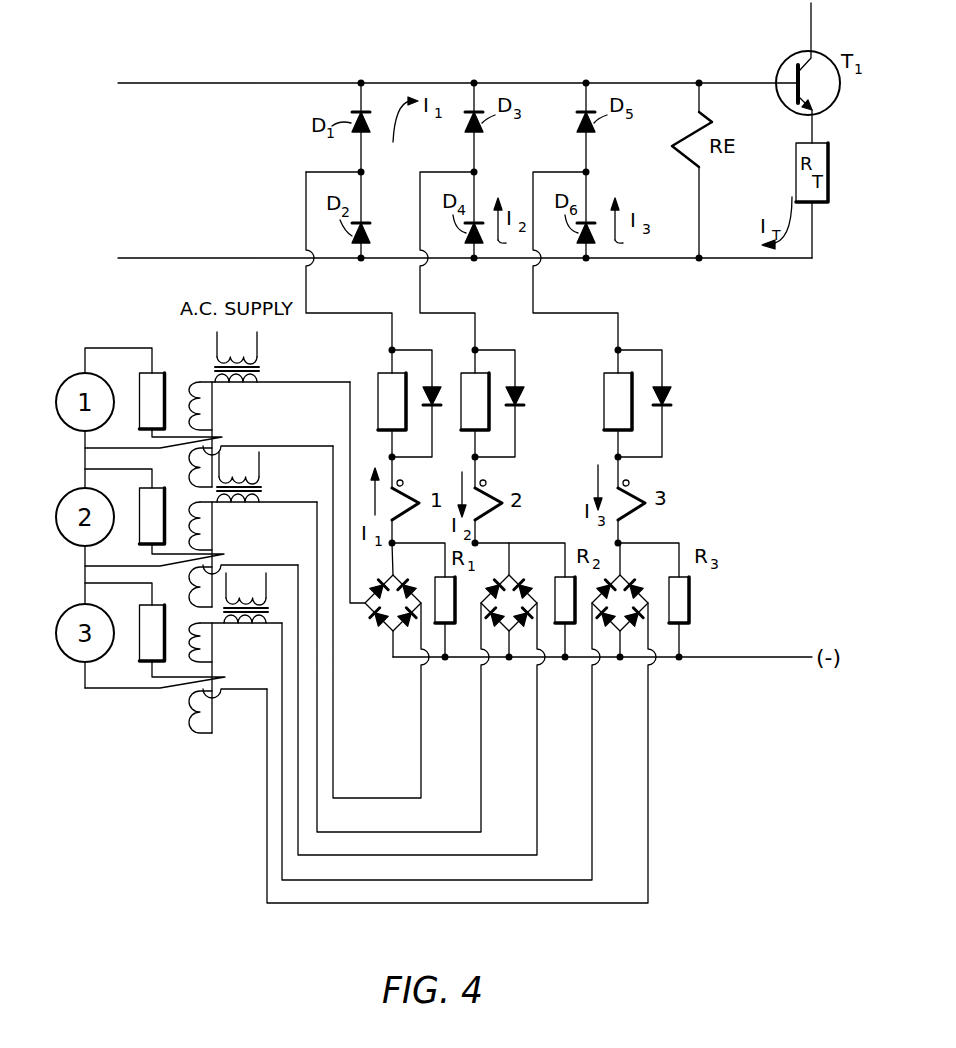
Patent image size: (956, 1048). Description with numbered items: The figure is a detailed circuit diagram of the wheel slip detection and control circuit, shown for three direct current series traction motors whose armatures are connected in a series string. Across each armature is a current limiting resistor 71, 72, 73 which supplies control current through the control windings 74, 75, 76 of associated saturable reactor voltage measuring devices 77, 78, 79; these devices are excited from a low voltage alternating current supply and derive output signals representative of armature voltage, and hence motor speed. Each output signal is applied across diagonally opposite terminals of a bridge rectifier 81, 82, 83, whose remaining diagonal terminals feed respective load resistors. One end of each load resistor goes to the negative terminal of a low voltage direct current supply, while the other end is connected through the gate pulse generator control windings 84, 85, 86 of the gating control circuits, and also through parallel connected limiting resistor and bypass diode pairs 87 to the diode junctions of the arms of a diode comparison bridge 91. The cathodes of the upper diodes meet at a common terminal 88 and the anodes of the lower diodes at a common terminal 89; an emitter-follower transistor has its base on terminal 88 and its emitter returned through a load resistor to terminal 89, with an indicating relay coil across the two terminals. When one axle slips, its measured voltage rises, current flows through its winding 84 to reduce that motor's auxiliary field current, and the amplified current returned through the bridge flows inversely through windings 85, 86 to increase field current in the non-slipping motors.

The current limiting resistor 71 is at (157, 378).
The current limiting resistor 72 is at (153, 492).
The current limiting resistor 73 is at (155, 612).
The control winding 74 is at (160, 448).
The control winding 75 is at (160, 566).
The control winding 76 is at (171, 691).
The saturable reactor voltage measuring device 77 is at (259, 424).
The saturable reactor voltage measuring device 78 is at (264, 544).
The saturable reactor voltage measuring device 79 is at (257, 661).
The bridge rectifier 81 is at (386, 628).
The bridge rectifier 82 is at (510, 580).
The bridge rectifier 83 is at (620, 580).
The gate pulse generator control winding 84 is at (408, 490).
The gate pulse generator control winding 85 is at (498, 498).
The gate pulse generator control winding 86 is at (644, 495).
The parallel connected limiting resistor and bypass diode pair 87 is at (653, 452).
The common terminal 88 is at (304, 83).
The common terminal 89 is at (226, 258).
The diode comparison bridge 91 is at (399, 181).